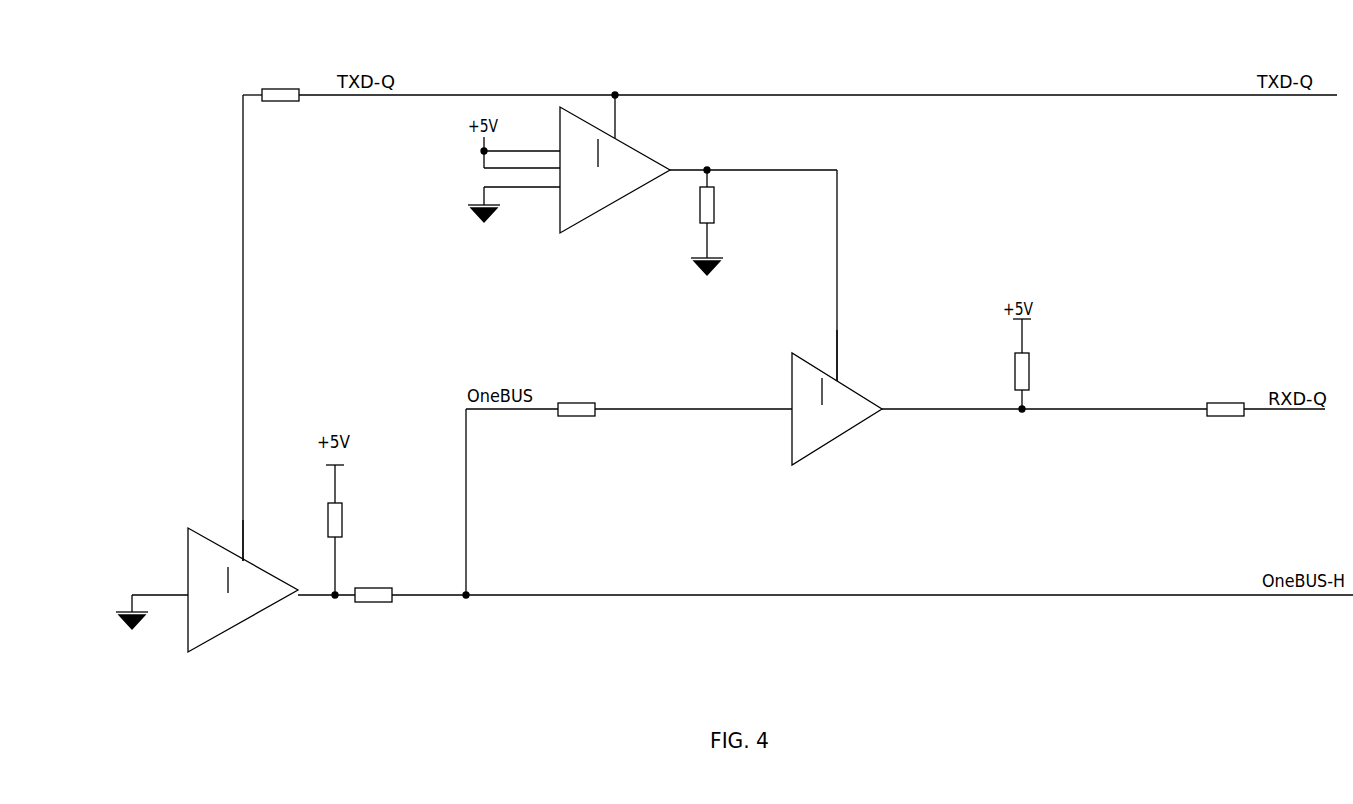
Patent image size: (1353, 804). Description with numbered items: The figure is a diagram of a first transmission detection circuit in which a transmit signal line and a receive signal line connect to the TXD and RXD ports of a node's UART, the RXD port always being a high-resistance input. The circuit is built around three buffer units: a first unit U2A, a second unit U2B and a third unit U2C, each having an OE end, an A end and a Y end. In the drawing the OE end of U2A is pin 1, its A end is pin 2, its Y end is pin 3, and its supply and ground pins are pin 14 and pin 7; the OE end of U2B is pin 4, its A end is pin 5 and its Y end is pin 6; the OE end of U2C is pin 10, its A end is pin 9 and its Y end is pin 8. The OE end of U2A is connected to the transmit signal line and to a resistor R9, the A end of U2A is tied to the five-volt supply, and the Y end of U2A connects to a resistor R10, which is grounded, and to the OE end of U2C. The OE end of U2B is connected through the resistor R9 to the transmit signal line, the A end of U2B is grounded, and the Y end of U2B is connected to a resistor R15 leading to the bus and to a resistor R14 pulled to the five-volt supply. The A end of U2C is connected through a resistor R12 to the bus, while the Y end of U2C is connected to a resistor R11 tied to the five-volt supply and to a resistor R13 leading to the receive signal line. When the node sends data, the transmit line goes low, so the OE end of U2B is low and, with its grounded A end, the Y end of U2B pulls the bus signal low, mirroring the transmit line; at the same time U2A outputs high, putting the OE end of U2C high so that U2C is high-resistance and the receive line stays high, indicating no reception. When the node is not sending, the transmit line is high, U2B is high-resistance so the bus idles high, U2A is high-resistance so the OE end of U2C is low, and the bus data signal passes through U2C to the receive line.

The resistor R9 is at (281, 97).
The resistor R10 is at (727, 222).
The resistor R11 is at (1048, 364).
The resistor R12 is at (577, 411).
The resistor R13 is at (1266, 409).
The resistor R14 is at (361, 530).
The resistor R15 is at (372, 595).
The U2A unit U2A is at (609, 189).
The U2B unit U2B is at (239, 615).
The U2C unit U2C is at (827, 432).
The pin 1 OE of U2A 1 is at (604, 115).
The pin 14 VCC of U2A 14 is at (520, 144).
The pin 2 A of U2A 2 is at (522, 155).
The pin 7 GND of U2A 7 is at (514, 196).
The pin 3 Y of U2A 3 is at (753, 161).
The pin 10 OE of U2C 10 is at (824, 355).
The pin 9 A of U2C 9 is at (693, 396).
The pin 8 Y of U2C 8 is at (1044, 398).
The pin 4 OE of U2B 4 is at (231, 540).
The pin 5 A of U2B 5 is at (152, 601).
The pin 6 Y of U2B 6 is at (326, 585).